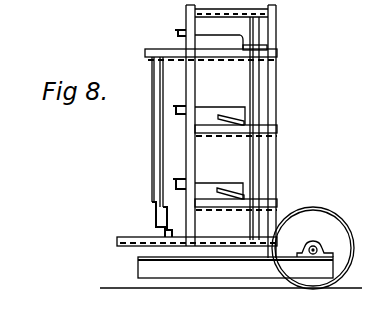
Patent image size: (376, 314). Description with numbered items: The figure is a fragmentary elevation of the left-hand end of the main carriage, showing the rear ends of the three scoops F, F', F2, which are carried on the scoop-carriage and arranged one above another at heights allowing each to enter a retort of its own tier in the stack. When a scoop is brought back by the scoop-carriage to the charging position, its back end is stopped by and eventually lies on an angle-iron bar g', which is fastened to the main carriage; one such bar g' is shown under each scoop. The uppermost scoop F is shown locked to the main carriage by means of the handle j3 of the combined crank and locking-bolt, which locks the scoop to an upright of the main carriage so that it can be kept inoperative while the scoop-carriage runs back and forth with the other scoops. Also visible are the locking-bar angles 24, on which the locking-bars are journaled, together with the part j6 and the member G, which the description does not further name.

The locking-bar angle 24 is at (171, 100).
The angle-iron bar g' is at (197, 147).
The handle of the combined crank and bolt j3 is at (268, 46).
The guide rod j6 is at (238, 128).
The scoop F is at (219, 42).
The scoop F' is at (220, 107).
The scoop F2 is at (219, 182).
The ground G is at (237, 300).